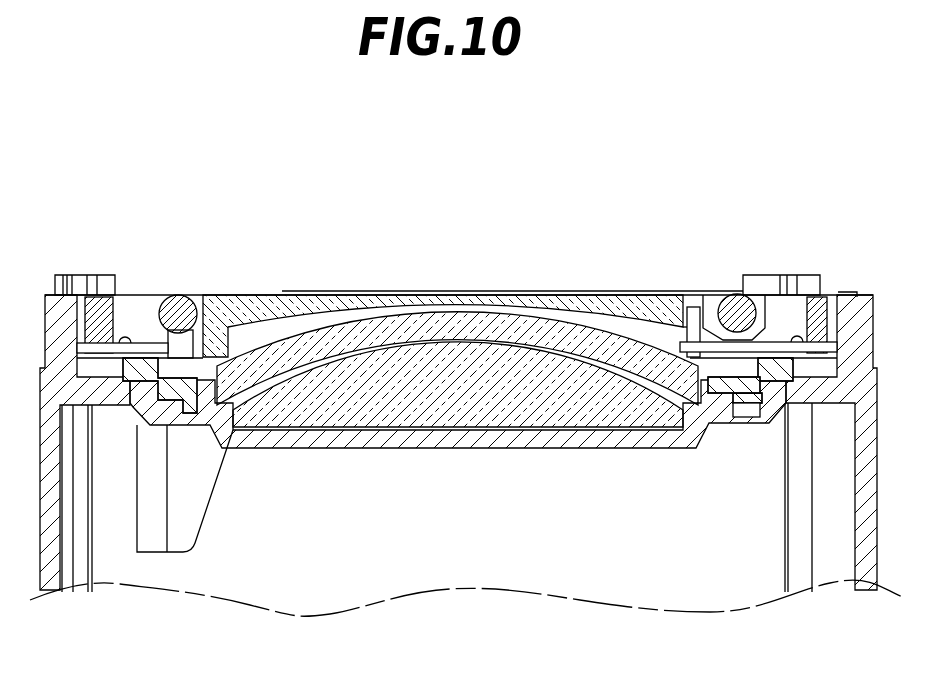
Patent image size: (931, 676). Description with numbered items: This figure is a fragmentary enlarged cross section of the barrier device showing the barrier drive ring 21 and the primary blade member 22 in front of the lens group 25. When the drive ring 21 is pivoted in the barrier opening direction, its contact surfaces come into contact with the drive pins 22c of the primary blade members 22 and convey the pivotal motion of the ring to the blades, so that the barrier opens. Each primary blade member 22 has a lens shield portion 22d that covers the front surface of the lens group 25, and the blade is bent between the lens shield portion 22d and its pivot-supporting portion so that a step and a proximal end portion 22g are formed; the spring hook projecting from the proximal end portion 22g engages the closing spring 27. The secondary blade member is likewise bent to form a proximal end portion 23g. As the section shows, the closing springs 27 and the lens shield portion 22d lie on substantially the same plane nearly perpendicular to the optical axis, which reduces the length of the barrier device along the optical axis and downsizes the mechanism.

The barrier drive ring 21 is at (175, 412).
The primary blade member 22 is at (590, 307).
The drive pin 22c is at (727, 372).
The lens shield portion 22d is at (503, 291).
The proximal end portion 22g is at (782, 348).
The proximal end portion 23g is at (140, 346).
The lens group 25 is at (440, 427).
The closing spring 27 is at (182, 300).